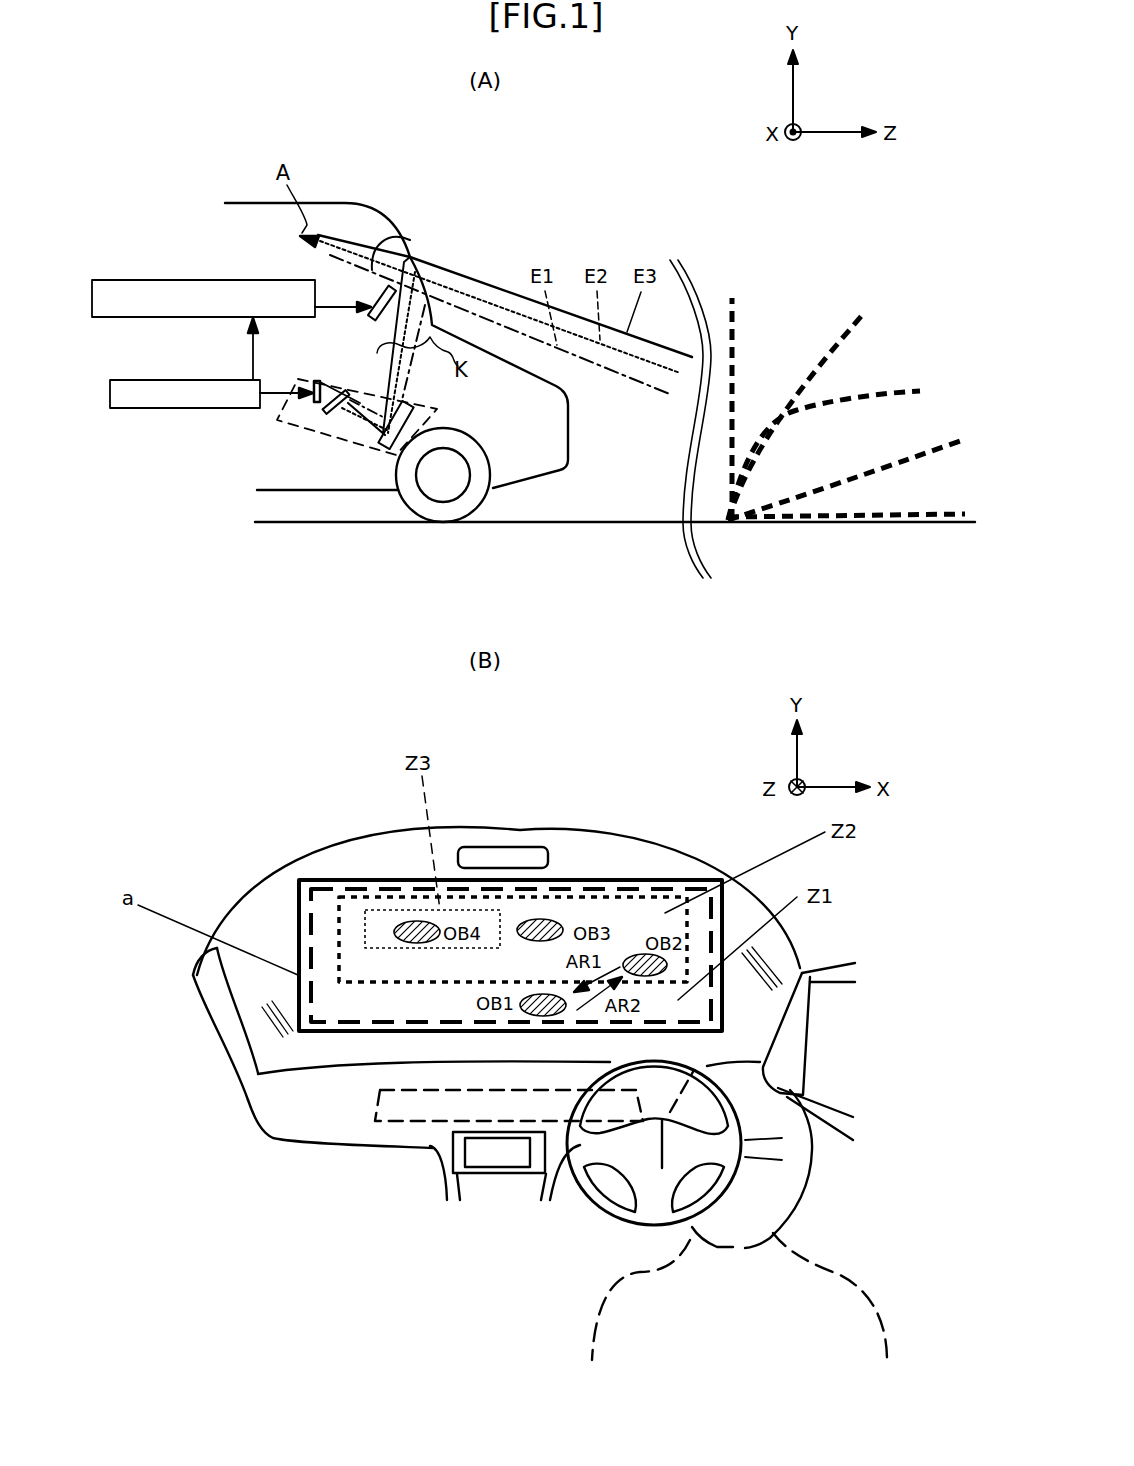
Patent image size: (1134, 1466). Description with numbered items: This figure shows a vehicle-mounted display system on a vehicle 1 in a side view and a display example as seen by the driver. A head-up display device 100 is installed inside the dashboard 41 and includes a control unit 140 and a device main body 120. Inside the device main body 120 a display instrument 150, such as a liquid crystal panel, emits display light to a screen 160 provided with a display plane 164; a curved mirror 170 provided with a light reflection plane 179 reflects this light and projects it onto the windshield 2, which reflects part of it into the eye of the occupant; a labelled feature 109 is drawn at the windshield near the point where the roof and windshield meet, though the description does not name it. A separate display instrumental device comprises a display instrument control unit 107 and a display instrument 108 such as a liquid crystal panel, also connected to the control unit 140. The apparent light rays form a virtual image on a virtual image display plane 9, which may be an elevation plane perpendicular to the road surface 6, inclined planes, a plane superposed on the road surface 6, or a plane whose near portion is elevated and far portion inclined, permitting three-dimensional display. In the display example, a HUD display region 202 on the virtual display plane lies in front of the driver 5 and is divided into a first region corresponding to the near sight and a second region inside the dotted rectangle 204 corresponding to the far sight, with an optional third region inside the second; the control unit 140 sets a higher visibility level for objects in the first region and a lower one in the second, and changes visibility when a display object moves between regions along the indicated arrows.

The vehicle 1 is at (353, 183).
The windshield 2 is at (376, 214).
The driver 5 is at (640, 1277).
The road surface 6 is at (649, 521).
The virtual image display plane 9 is at (915, 292).
The dashboard 41 is at (247, 348).
The head-up display device 100 is at (230, 430).
The display instrument control unit 107 is at (203, 281).
The display instrument 108 is at (373, 290).
The windshield display region 109 is at (385, 250).
The device main body 120 is at (277, 421).
The control unit 140 is at (132, 380).
The display instrument 150 is at (312, 378).
The screen 160 is at (337, 390).
The display plane 164 is at (336, 428).
The curved mirror 170 is at (405, 418).
The light reflection plane 179 is at (380, 440).
The HUD display region 202 is at (308, 947).
The dotted rectangle 204 is at (337, 916).